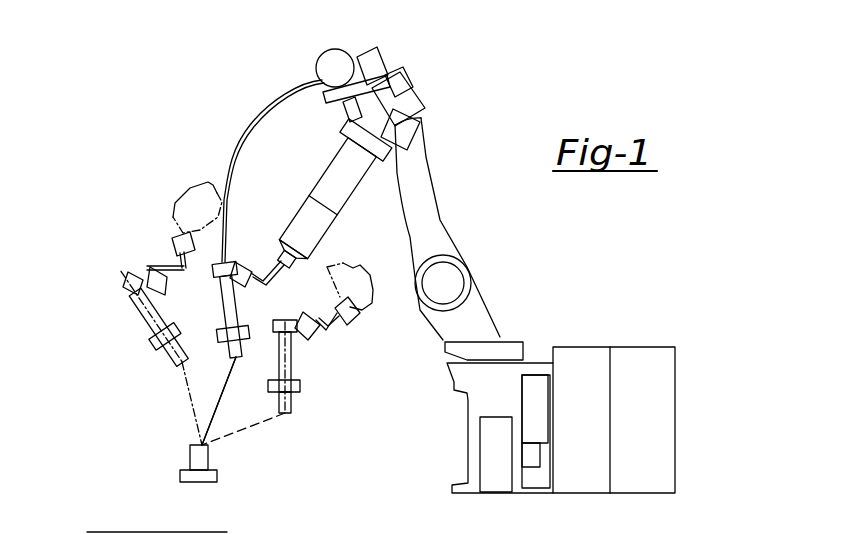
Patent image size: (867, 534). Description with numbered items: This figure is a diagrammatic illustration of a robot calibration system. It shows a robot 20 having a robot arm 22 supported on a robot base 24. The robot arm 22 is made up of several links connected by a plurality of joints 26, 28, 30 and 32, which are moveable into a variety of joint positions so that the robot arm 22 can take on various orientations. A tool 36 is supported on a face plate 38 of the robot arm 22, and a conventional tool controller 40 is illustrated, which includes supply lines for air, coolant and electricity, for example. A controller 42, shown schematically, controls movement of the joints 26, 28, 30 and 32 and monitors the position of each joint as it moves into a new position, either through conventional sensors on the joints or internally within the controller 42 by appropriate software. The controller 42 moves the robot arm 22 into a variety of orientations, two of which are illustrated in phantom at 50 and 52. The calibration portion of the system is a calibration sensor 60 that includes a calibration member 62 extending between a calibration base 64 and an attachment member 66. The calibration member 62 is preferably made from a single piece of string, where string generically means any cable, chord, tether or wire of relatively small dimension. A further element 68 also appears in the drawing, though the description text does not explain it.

The robot 20 is at (552, 255).
The robot arm 22 is at (434, 178).
The robot base 24 is at (468, 457).
The joint 26 is at (280, 246).
The joint 28 is at (403, 128).
The joint 30 is at (443, 283).
The joint 32 is at (500, 338).
The tool 36 is at (225, 309).
The face plate 38 is at (246, 288).
The tool controller 40 is at (313, 68).
The controller 42 is at (650, 428).
The robot arm orientation 50 is at (122, 295).
The robot arm orientation 52 is at (297, 374).
The calibration sensor 60 is at (178, 405).
The calibration member 62 is at (222, 377).
The calibration base 64 is at (215, 473).
The attachment member 66 is at (220, 340).
The workpiece 68 is at (198, 526).